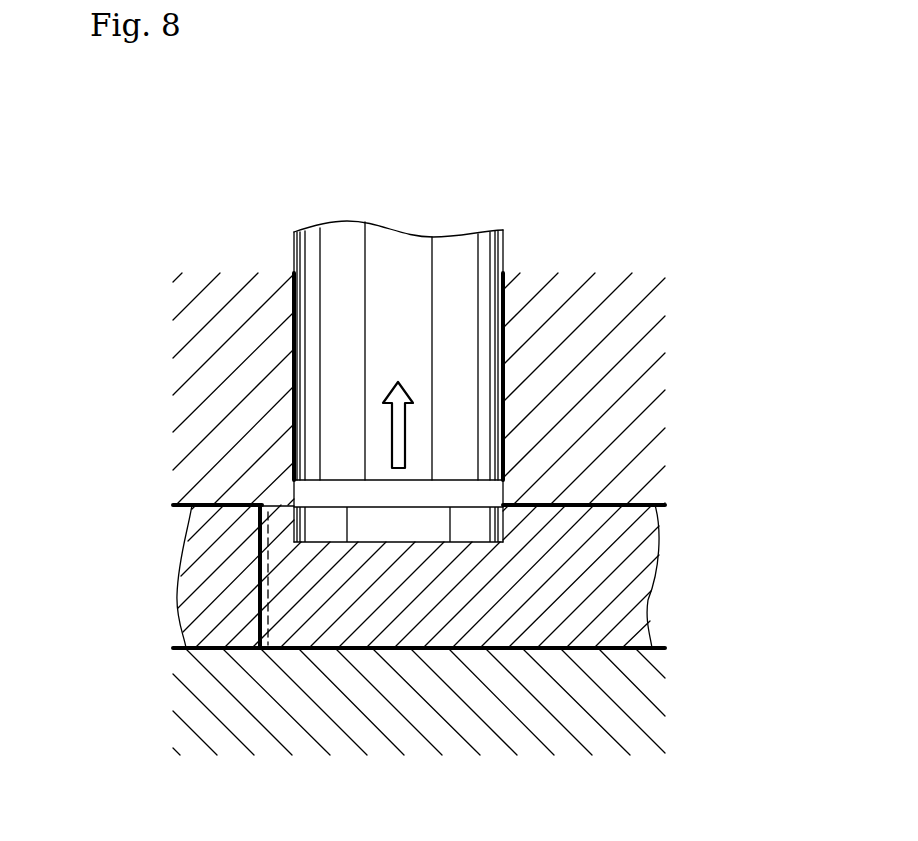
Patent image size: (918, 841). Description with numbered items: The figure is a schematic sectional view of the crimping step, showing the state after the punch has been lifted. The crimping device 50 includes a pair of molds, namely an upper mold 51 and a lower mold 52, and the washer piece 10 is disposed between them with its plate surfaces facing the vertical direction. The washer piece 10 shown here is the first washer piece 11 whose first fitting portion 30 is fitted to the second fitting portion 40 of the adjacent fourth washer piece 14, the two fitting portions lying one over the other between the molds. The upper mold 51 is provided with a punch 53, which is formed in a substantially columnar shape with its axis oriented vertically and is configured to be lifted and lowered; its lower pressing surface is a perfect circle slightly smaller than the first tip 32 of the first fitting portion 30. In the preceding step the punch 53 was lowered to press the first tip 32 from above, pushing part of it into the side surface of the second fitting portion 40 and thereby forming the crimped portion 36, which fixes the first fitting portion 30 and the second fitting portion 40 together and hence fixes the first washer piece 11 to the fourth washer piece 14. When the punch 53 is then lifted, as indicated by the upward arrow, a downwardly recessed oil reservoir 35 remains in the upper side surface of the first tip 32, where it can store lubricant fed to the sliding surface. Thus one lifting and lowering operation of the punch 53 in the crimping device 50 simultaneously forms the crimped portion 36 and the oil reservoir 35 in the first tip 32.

The washer piece 10 is at (417, 563).
The first washer piece 11 is at (703, 541).
The fourth washer piece 14 is at (130, 558).
The first fitting portion 30 is at (648, 575).
The first tip 32 is at (414, 596).
The oil reservoir 35 is at (362, 541).
The crimped portion 36 is at (259, 546).
The second fitting portion 40 is at (180, 580).
The crimping device 50 is at (338, 377).
The upper mold 51 is at (138, 380).
The lower mold 52 is at (138, 685).
The punch 53 is at (398, 247).